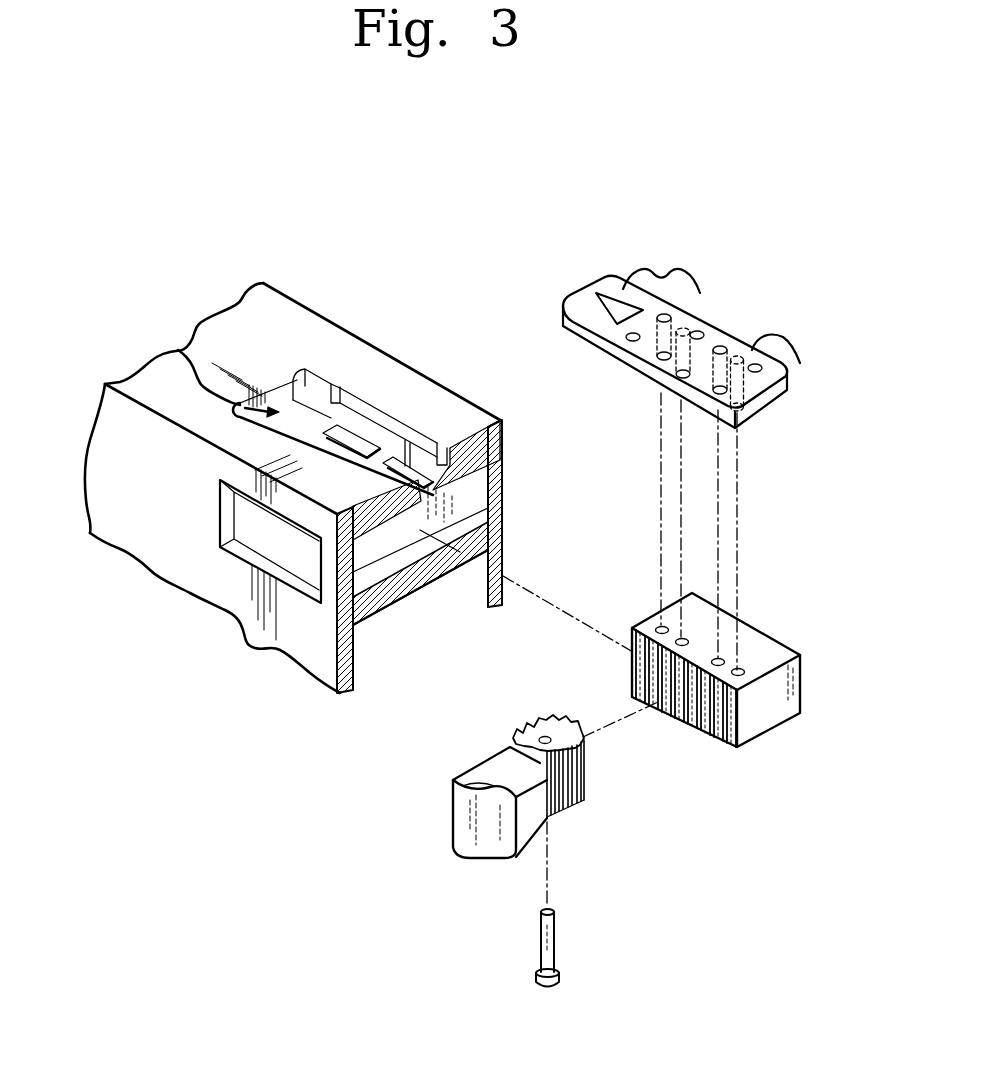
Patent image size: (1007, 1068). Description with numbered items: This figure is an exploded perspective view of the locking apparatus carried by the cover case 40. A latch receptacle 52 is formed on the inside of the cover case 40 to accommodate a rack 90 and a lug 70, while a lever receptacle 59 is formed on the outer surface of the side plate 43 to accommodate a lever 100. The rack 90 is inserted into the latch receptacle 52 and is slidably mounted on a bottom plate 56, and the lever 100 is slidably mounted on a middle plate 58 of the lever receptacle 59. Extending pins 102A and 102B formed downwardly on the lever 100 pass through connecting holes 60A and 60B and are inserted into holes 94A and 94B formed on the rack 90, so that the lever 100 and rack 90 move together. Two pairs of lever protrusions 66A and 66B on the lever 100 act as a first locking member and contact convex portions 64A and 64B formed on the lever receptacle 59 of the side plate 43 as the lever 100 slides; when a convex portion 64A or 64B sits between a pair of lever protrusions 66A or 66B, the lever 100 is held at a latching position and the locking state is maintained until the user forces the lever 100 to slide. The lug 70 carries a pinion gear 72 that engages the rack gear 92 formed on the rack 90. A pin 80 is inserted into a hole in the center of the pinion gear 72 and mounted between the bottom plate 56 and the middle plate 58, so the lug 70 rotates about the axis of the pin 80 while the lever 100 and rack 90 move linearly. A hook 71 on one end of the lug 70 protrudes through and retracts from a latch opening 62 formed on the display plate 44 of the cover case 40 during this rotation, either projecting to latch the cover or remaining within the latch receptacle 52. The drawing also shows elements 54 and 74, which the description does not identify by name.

The cover case 40 is at (402, 443).
The side plate 43 is at (227, 323).
The display plate 44 is at (138, 588).
The latch receptacle 52 is at (376, 574).
The side wall 54 is at (503, 490).
The bottom plate 56 is at (422, 578).
The middle plate 58 is at (333, 380).
The lever receptacle 59 is at (178, 350).
The connecting hole 60A is at (407, 467).
The connecting hole 60B is at (438, 440).
The latch opening 62 is at (262, 538).
The convex portion 64A is at (360, 440).
The convex portion 64B is at (447, 448).
The lever protrusion 66A is at (700, 292).
The lever protrusion 66B is at (800, 347).
The lug 70 is at (485, 773).
The hook 71 is at (493, 790).
The pinion gear 72 is at (574, 786).
The gear 74 is at (550, 737).
The pin 80 is at (560, 948).
The rack 90 is at (731, 682).
The rack gear 92 is at (706, 720).
The hole 94A is at (683, 638).
The hole 94B is at (723, 660).
The lever 100 is at (727, 347).
The extending pin 102A is at (672, 372).
The extending pin 102B is at (745, 402).